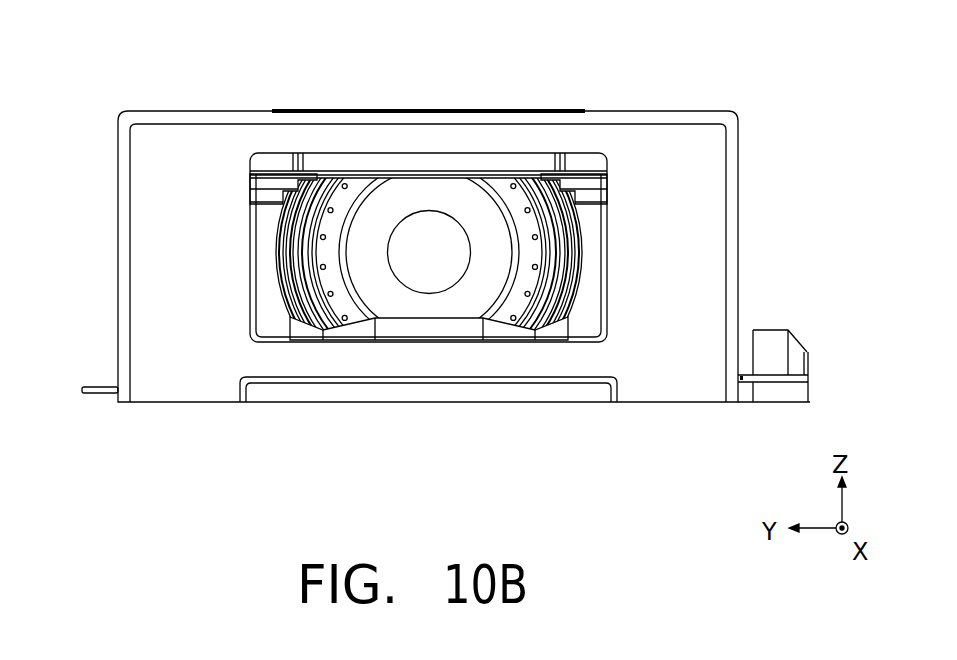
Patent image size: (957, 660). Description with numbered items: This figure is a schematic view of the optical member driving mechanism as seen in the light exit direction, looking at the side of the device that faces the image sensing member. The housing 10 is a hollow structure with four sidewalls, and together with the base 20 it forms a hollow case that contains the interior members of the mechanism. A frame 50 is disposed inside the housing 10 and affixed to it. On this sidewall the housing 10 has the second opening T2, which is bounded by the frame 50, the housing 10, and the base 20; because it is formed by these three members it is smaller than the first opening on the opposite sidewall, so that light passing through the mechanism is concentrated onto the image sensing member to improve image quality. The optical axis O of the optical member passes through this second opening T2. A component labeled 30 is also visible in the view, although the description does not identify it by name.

The housing 10 is at (702, 217).
The base 20 is at (559, 390).
The holder 30 is at (266, 227).
The frame 50 is at (498, 163).
The optical axis O is at (429, 252).
The second opening T2 is at (578, 183).